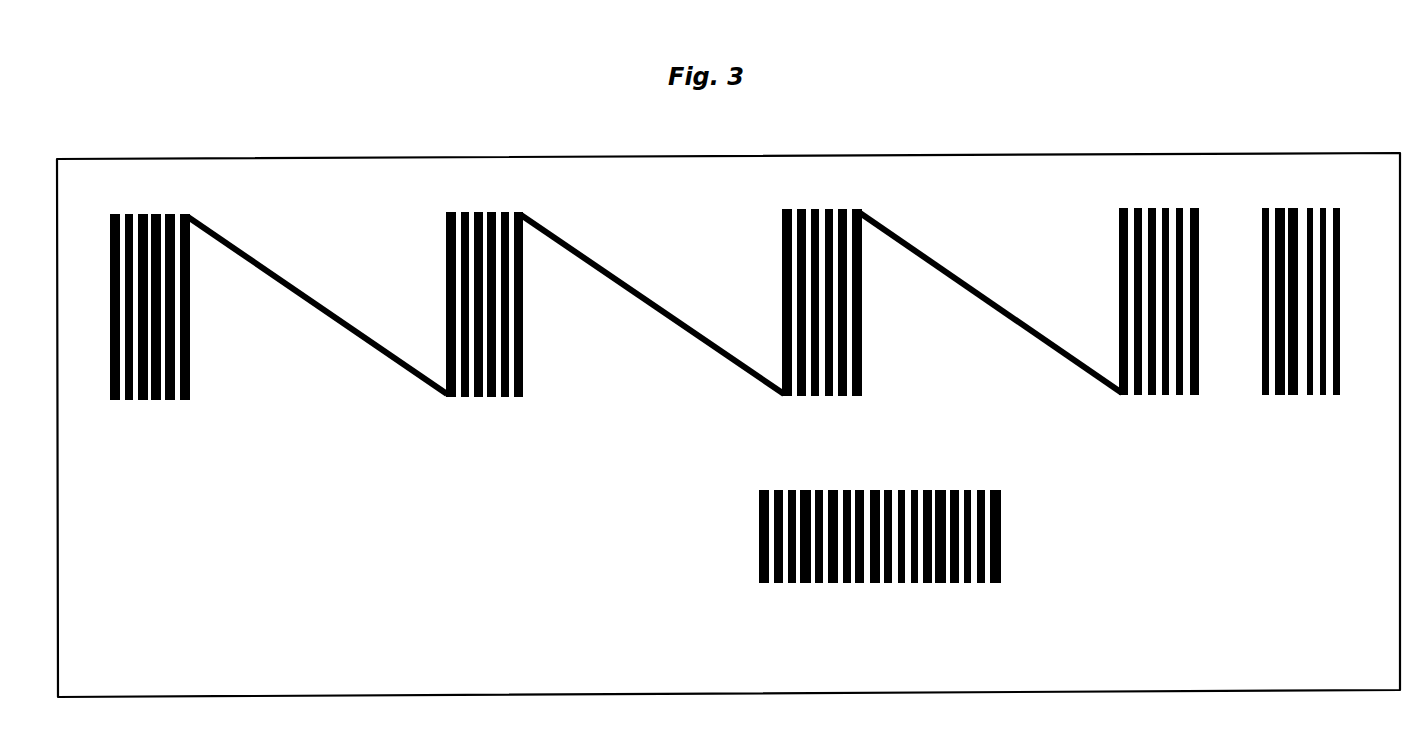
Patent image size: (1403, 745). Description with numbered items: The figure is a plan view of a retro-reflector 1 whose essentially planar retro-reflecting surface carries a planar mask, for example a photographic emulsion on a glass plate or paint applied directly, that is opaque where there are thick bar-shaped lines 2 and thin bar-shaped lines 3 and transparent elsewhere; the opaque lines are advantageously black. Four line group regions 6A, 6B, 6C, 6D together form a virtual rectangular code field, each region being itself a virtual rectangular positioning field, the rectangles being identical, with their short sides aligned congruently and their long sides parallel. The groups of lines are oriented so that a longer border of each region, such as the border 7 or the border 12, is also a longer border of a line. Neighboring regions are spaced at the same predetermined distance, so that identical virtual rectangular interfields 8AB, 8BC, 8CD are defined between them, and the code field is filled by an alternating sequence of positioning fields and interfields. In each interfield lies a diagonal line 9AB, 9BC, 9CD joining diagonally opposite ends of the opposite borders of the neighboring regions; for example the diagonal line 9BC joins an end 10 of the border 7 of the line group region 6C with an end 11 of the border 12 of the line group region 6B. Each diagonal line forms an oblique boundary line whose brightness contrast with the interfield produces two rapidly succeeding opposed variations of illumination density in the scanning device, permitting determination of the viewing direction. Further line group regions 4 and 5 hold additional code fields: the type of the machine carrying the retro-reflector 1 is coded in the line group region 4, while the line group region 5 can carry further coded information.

The retro-reflector 1 is at (285, 697).
The opaque thick bar-shaped lines 2 is at (844, 398).
The opaque thin bar-shaped lines 3 is at (813, 398).
The line group region 4 is at (725, 541).
The further line group region 5 is at (1302, 415).
The line group region 6A is at (1100, 250).
The line group region 6B is at (788, 339).
The line group region 6C is at (481, 302).
The line group region 6D is at (209, 366).
The border 7 is at (524, 322).
The rectangular interfield 8AB is at (906, 357).
The rectangular interfield 8BC is at (581, 359).
The rectangular interfield 8CD is at (273, 352).
The diagonal line 9AB is at (1015, 326).
The diagonal line 9BC is at (678, 331).
The diagonal line 9CD is at (386, 356).
The end of the border 10 is at (524, 213).
The end of the border 11 is at (785, 398).
The border 12 is at (782, 305).